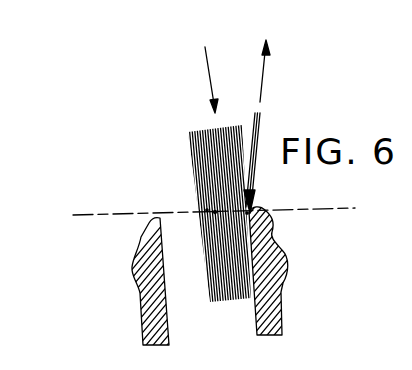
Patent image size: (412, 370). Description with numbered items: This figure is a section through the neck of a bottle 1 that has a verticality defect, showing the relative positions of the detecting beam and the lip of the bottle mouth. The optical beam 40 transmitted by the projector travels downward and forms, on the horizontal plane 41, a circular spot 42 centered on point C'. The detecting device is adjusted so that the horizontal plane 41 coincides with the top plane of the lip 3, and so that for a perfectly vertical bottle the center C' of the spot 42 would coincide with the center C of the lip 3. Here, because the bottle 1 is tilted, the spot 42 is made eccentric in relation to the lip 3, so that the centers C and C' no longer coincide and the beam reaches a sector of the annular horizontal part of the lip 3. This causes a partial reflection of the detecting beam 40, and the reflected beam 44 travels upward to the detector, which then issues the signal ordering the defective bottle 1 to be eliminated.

The bottle 1 is at (293, 310).
The lip 3 is at (153, 218).
The optical beam 40 is at (203, 152).
The horizontal plane 41 is at (92, 209).
The spot 42 is at (215, 212).
The reflected beam 44 is at (262, 127).
The center of lip C is at (193, 245).
The center of spot C' is at (299, 242).